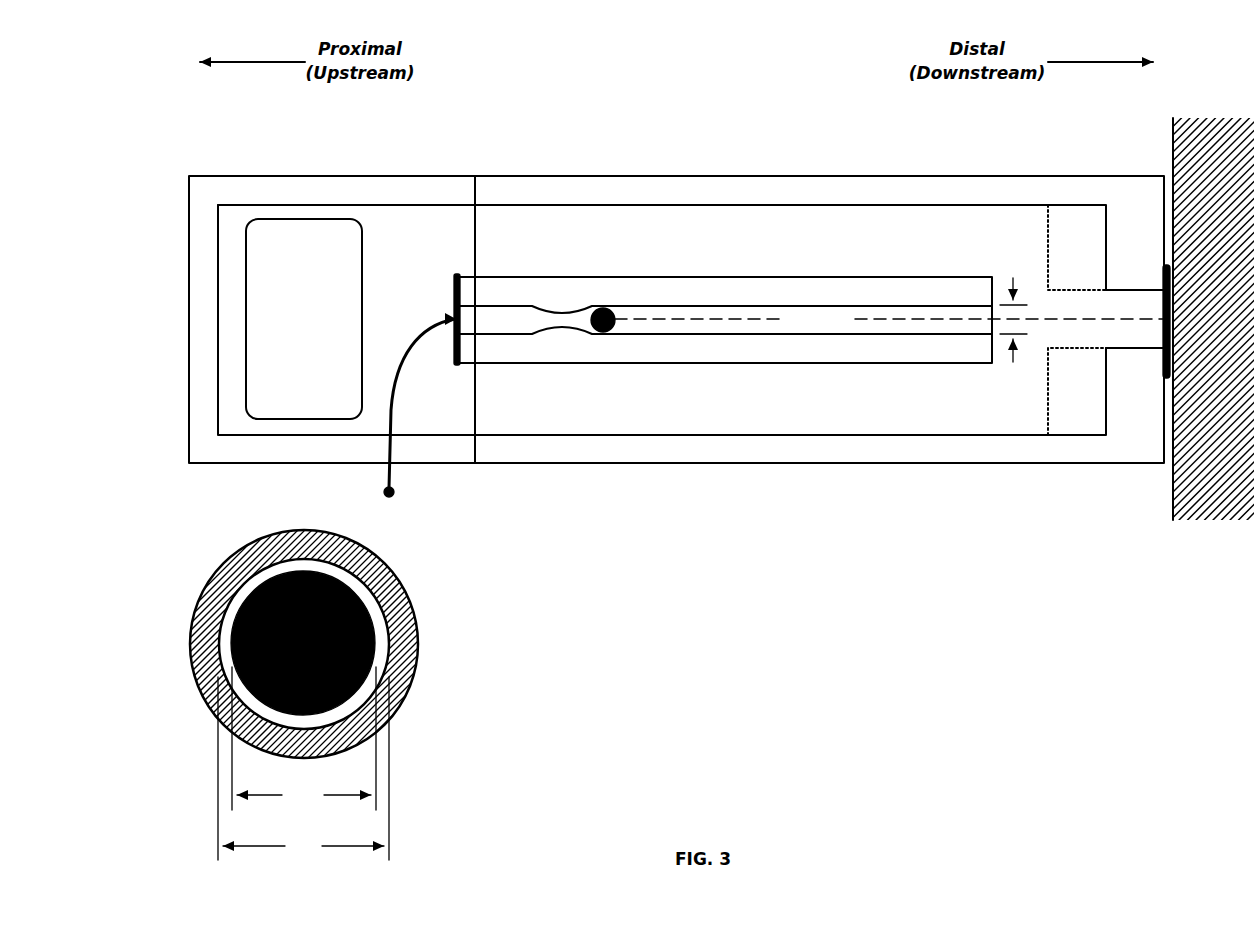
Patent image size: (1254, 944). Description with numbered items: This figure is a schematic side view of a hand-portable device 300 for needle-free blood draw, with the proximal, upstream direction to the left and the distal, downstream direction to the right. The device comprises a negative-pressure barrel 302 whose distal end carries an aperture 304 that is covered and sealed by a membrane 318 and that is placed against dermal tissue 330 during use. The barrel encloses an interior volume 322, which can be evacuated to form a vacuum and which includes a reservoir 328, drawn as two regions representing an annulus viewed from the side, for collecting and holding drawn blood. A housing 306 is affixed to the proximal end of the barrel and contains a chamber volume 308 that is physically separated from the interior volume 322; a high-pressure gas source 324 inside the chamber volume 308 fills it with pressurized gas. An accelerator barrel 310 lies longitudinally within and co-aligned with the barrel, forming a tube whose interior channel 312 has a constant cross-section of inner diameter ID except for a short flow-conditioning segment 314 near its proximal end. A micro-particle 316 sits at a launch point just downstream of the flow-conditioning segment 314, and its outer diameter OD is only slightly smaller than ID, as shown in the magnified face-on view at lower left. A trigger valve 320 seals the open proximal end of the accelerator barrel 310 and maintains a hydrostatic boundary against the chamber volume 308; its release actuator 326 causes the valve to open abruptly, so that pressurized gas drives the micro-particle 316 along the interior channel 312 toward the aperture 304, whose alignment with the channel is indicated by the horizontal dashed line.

The hand-portable device 300 is at (650, 88).
The negative-pressure barrel 302 is at (833, 176).
The aperture 304 is at (1139, 300).
The housing 306 is at (303, 176).
The chamber volume 308 is at (430, 227).
The accelerator barrel 310 is at (876, 277).
The interior channel 312 is at (819, 318).
The flow-conditioning segment 314 is at (559, 336).
The micro-particle 316 is at (620, 308).
The membrane 318 is at (1162, 352).
The trigger valve 320 is at (453, 296).
The interior volume 322 is at (796, 399).
The high-pressure gas source 324 is at (289, 406).
The release actuator 326 is at (386, 477).
The reservoir 328 is at (1063, 259).
The dermal tissue 330 is at (1172, 487).